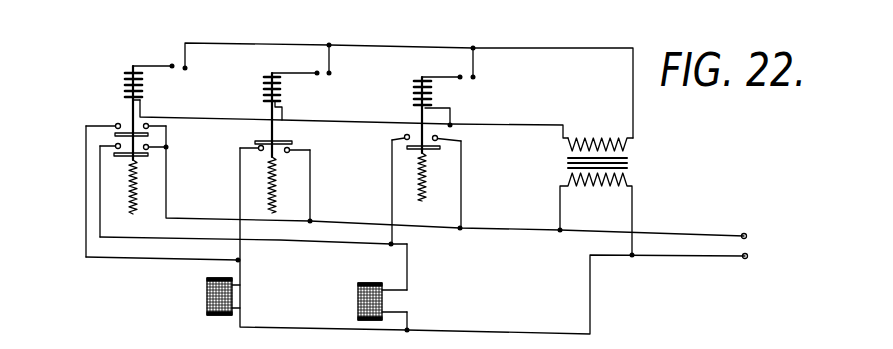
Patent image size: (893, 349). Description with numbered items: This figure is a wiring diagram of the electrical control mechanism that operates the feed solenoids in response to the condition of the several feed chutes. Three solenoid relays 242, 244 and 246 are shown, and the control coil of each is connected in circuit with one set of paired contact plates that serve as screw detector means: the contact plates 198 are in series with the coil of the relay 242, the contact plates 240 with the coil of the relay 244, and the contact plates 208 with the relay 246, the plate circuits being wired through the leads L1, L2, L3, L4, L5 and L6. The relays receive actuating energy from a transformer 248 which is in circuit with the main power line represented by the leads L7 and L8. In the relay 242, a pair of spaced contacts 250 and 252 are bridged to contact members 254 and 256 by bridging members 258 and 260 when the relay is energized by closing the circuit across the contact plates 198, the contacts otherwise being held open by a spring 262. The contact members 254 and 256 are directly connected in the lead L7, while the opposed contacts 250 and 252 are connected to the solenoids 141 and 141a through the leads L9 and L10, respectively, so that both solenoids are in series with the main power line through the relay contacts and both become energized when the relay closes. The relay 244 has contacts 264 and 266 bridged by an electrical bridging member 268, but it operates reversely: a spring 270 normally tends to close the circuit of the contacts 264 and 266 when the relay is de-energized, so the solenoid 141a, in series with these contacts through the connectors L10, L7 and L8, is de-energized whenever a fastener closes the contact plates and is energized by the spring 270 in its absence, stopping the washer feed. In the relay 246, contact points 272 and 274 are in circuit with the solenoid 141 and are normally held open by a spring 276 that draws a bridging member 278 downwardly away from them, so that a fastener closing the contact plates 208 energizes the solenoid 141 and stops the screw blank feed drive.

The contact plates 198 is at (175, 58).
The lead L1 is at (155, 71).
The lead L2 is at (186, 62).
The lead L3 is at (452, 75).
The lead L4 is at (475, 63).
The lead L5 is at (298, 71).
The lead L6 is at (332, 61).
The main power line lead L7 is at (744, 226).
The main power line lead L8 is at (744, 269).
The current lead L9 is at (147, 239).
The current lead L10 is at (97, 258).
The contact plates 240 is at (332, 71).
The contact plates 208 is at (484, 75).
The solenoid relay 242 is at (108, 118).
The bridging member 258 is at (118, 122).
The contact 250 is at (115, 128).
The contact 252 is at (115, 148).
The contact member 254 is at (148, 123).
The contact member 256 is at (148, 149).
The bridging member 260 is at (122, 156).
The spring 262 is at (128, 198).
The solenoid relay 244 is at (248, 133).
The electrical bridging member 268 is at (286, 138).
The contact 266 is at (259, 151).
The contact 264 is at (290, 148).
The spring 270 is at (274, 182).
The solenoid relay 246 is at (412, 128).
The contact point 274 is at (405, 140).
The contact point 272 is at (437, 135).
The bridging member 278 is at (441, 150).
The spring 276 is at (426, 185).
The transformer 248 is at (636, 161).
The solenoid 141a is at (312, 307).
The solenoid 141 is at (383, 303).